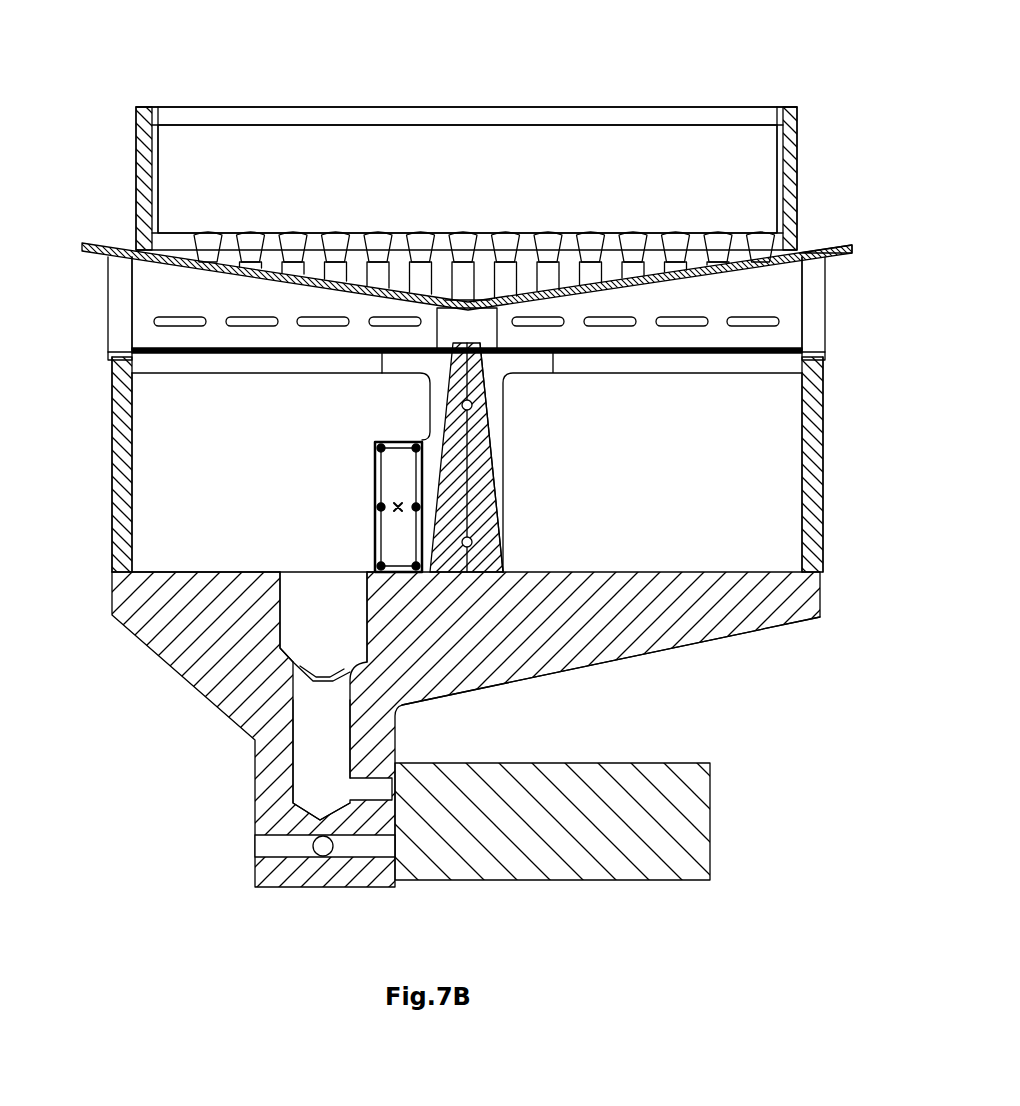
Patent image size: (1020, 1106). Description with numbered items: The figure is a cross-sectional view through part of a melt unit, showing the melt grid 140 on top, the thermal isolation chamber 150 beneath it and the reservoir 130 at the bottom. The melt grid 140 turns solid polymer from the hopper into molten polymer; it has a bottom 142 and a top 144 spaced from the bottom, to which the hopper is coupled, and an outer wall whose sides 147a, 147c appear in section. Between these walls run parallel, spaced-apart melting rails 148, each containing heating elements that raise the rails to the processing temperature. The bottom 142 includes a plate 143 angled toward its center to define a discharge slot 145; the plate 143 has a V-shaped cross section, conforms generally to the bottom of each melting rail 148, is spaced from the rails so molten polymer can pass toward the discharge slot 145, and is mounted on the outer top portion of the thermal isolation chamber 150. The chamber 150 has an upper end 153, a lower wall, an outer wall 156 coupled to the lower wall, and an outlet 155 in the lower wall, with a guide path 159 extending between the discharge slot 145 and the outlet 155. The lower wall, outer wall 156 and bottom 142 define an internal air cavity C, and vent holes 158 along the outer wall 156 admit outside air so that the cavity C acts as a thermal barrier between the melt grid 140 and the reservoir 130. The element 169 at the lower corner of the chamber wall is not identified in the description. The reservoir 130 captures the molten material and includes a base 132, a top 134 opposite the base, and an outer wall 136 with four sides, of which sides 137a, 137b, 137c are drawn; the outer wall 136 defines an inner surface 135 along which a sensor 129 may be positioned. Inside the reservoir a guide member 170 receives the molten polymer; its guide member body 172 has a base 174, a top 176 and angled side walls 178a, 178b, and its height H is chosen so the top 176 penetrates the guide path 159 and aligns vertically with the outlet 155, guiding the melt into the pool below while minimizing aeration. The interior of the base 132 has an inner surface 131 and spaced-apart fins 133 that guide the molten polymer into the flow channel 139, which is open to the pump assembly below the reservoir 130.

The melt grid 140 is at (102, 80).
The top 144 is at (338, 103).
The side 147a is at (140, 183).
The side 147c is at (798, 158).
The melting rails 148 is at (450, 181).
The plate 143 is at (724, 249).
The upper end 153 is at (815, 248).
The bottom 142 is at (178, 262).
The discharge slot 145 is at (471, 305).
The internal air cavity C is at (768, 296).
The thermal isolation chamber 150 is at (106, 310).
The outer wall 156 is at (812, 316).
The vent holes 158 is at (392, 320).
The top 134 is at (816, 350).
The flange 169 is at (112, 365).
The reservoir 130 is at (110, 548).
The outer wall 136 is at (112, 470).
The inner surface 135 is at (802, 478).
The side 137a is at (135, 521).
The side 137b is at (240, 462).
The side 137c is at (800, 535).
The guide path 159 is at (430, 375).
The base 174 is at (430, 383).
The outlet 155 is at (513, 365).
The sensor 129 is at (390, 532).
The angled side wall 178a is at (435, 474).
The angled side wall 178b is at (492, 424).
The guide member 170 is at (503, 480).
The guide member body 172 is at (470, 512).
The height H is at (468, 459).
The top 176 is at (470, 565).
The fins 133 is at (522, 630).
The base 132 is at (543, 681).
The inner surface 131 is at (344, 662).
The flow channel 139 is at (318, 752).